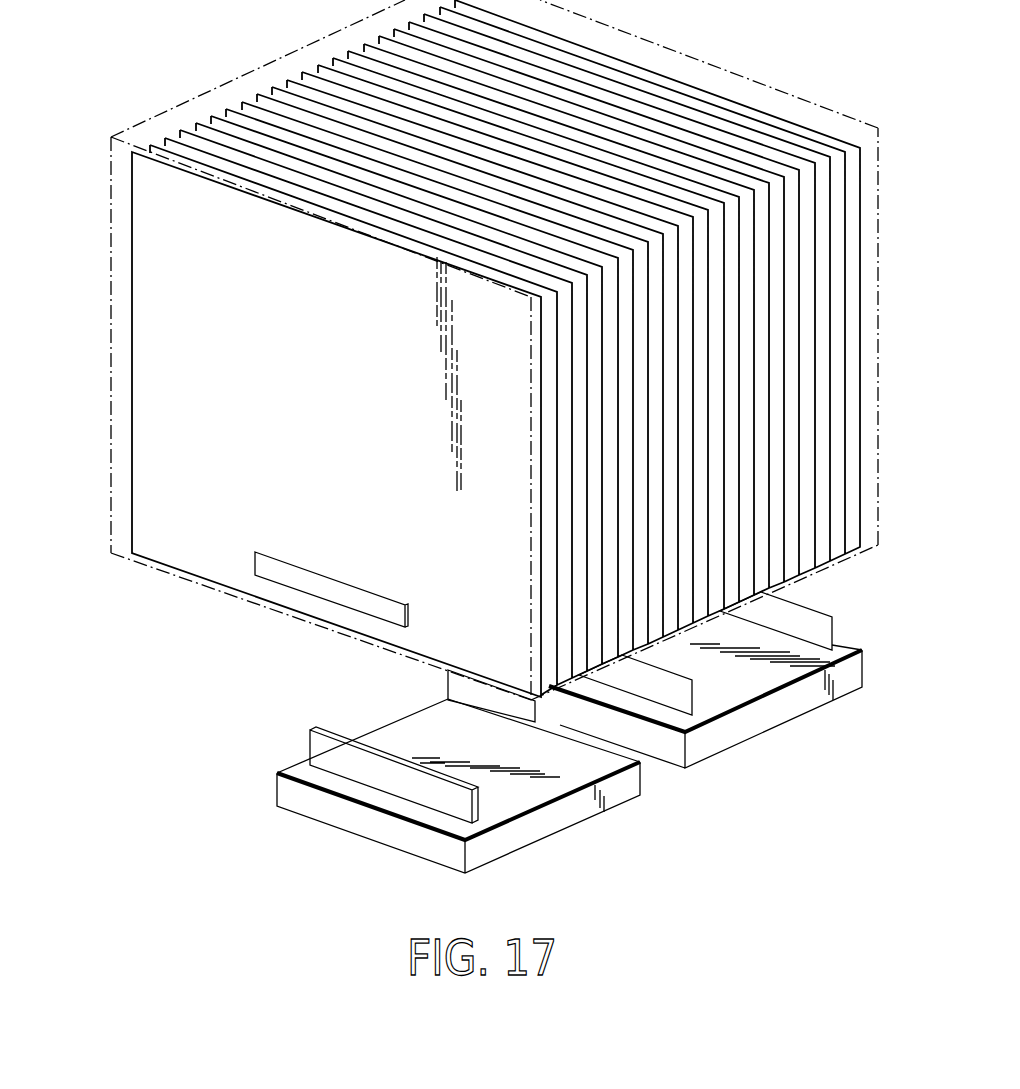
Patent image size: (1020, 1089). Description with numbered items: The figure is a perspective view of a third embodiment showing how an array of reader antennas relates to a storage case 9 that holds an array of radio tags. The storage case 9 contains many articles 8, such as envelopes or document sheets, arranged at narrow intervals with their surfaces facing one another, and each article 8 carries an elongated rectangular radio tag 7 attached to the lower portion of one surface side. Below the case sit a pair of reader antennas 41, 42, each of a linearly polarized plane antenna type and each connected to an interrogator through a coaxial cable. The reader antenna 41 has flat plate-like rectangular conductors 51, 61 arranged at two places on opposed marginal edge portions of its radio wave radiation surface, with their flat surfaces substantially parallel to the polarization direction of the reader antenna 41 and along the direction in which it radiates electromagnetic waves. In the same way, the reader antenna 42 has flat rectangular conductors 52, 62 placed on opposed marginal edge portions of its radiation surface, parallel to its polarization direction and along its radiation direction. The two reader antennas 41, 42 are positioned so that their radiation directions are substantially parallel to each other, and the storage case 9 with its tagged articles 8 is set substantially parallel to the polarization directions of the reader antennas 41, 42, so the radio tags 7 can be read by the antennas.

The radio tag 7 is at (277, 572).
The article 8 is at (155, 275).
The storage case 9 is at (133, 197).
The reader antenna 41 is at (523, 833).
The reader antenna 42 is at (768, 718).
The flat plate-like rectangular conductor 51 is at (316, 747).
The flat-like rectangular conductor 52 is at (685, 690).
The flat plate-like rectangular conductor 61 is at (447, 683).
The flat-like rectangular conductor 62 is at (833, 628).